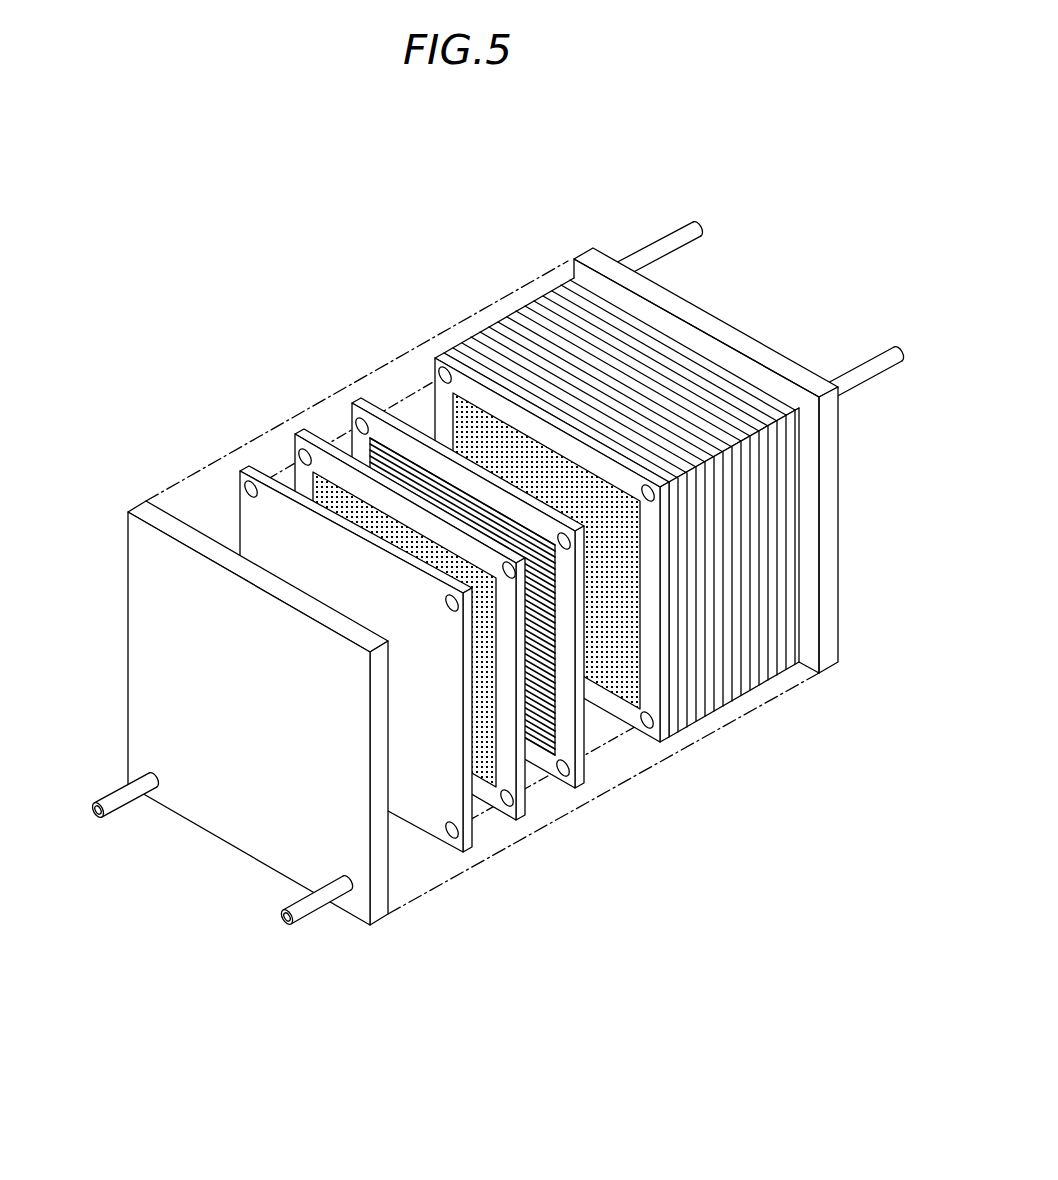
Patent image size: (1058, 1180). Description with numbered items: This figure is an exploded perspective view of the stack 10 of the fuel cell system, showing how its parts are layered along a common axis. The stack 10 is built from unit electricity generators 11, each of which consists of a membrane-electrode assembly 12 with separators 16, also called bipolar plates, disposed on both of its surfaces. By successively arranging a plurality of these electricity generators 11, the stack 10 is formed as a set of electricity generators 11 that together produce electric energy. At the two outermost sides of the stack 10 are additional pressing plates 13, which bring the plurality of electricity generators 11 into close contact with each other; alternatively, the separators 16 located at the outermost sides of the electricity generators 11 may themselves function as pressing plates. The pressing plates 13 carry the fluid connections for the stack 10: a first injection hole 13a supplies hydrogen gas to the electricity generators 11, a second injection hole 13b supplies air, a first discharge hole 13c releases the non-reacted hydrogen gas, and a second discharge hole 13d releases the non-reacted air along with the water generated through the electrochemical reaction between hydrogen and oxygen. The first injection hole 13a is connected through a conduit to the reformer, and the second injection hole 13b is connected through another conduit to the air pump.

The stack 10 is at (348, 255).
The unit electricity generator 11 is at (617, 565).
The membrane-electrode assembly 12 is at (670, 741).
The pressing plate 13 is at (830, 589).
The first injection hole 13a is at (309, 919).
The second injection hole 13b is at (884, 377).
The first discharge hole 13c is at (665, 245).
The second discharge hole 13d is at (112, 793).
The separator 16 is at (578, 774).